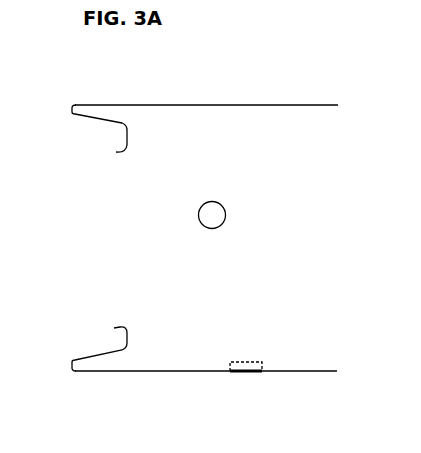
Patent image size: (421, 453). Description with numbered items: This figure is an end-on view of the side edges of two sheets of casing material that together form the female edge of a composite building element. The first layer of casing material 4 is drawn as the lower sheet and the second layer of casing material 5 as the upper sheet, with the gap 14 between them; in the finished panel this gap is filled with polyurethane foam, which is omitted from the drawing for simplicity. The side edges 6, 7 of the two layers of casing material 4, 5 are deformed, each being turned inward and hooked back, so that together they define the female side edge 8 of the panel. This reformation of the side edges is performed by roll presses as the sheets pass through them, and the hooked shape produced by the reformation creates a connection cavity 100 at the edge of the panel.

The first layer of casing material 4 is at (227, 377).
The second layer of casing material 5 is at (200, 105).
The side edge 6 is at (88, 210).
The side edge 7 is at (72, 113).
The female side edge 8 is at (72, 372).
The gap 14 is at (212, 215).
The connection cavity 100 is at (116, 349).